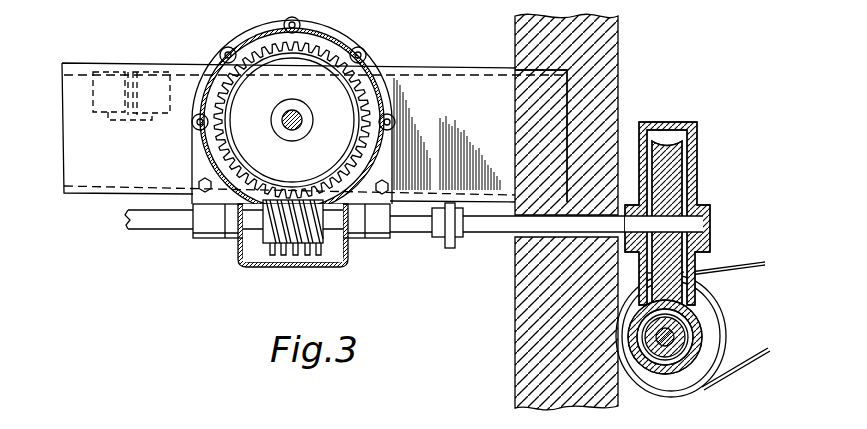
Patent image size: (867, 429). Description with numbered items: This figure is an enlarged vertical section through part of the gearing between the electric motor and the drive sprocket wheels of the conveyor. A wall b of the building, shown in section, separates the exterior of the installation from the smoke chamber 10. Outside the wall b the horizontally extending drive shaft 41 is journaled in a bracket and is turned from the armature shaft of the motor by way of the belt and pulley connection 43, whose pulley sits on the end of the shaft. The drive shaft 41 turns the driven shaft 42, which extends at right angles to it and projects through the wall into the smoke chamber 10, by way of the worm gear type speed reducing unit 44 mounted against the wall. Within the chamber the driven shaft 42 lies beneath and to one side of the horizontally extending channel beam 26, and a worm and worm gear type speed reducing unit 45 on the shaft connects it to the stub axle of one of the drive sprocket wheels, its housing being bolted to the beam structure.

The channel beam 26 is at (83, 184).
The worm and worm gear type speed reducing unit 45 is at (363, 68).
The driven shaft 42 is at (147, 230).
The smoke chamber 10 is at (503, 276).
The wall b is at (514, 326).
The worm gear type speed reducing unit 44 is at (698, 148).
The drive shaft 41 is at (677, 331).
The belt and pulley connection 43 is at (722, 378).